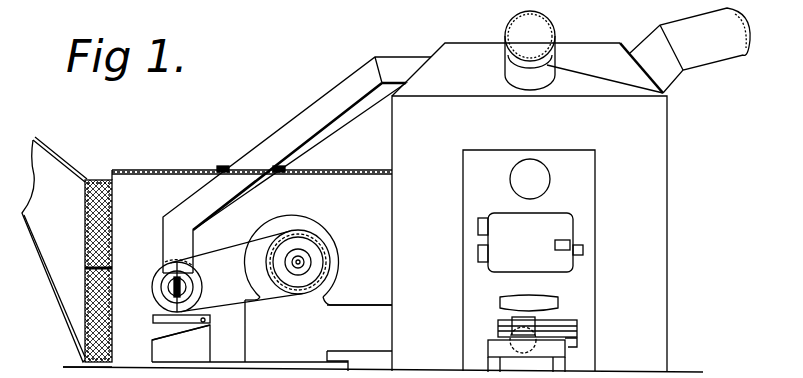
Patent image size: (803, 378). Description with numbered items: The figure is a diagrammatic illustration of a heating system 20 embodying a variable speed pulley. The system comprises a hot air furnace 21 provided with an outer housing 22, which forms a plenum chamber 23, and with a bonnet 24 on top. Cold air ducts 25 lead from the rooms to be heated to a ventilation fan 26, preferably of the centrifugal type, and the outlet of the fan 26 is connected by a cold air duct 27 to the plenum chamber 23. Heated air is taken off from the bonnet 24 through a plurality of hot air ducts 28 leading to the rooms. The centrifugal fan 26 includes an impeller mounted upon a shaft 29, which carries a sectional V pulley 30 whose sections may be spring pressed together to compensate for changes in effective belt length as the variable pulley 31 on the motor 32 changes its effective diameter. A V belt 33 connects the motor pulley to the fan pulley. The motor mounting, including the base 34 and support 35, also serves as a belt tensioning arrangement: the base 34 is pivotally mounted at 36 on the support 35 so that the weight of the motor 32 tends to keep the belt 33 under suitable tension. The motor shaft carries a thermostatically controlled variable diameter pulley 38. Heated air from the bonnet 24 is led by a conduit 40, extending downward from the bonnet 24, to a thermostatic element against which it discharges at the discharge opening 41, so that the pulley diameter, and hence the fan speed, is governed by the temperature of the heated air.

The heating system 20 is at (384, 166).
The hot air furnace 21 is at (597, 238).
The outer housing 22 is at (670, 188).
The plenum chamber 23 is at (651, 176).
The bonnet 24 is at (625, 35).
The cold air ducts 25 is at (60, 175).
The ventilation fan 26 is at (342, 252).
The cold air duct 27 is at (372, 304).
The hot air ducts 28 is at (667, 89).
The shaft 29 is at (305, 256).
The sectional V pulley 30 is at (293, 240).
The variable pulley 31 is at (157, 302).
The motor 32 is at (155, 282).
The V belt 33 is at (223, 248).
The base 34 is at (152, 340).
The support 35 is at (199, 347).
The pivot 36 is at (211, 317).
The thermostatically controlled variable diameter pulley 38 is at (190, 289).
The conduit 40 is at (295, 130).
The discharge opening 41 is at (183, 280).